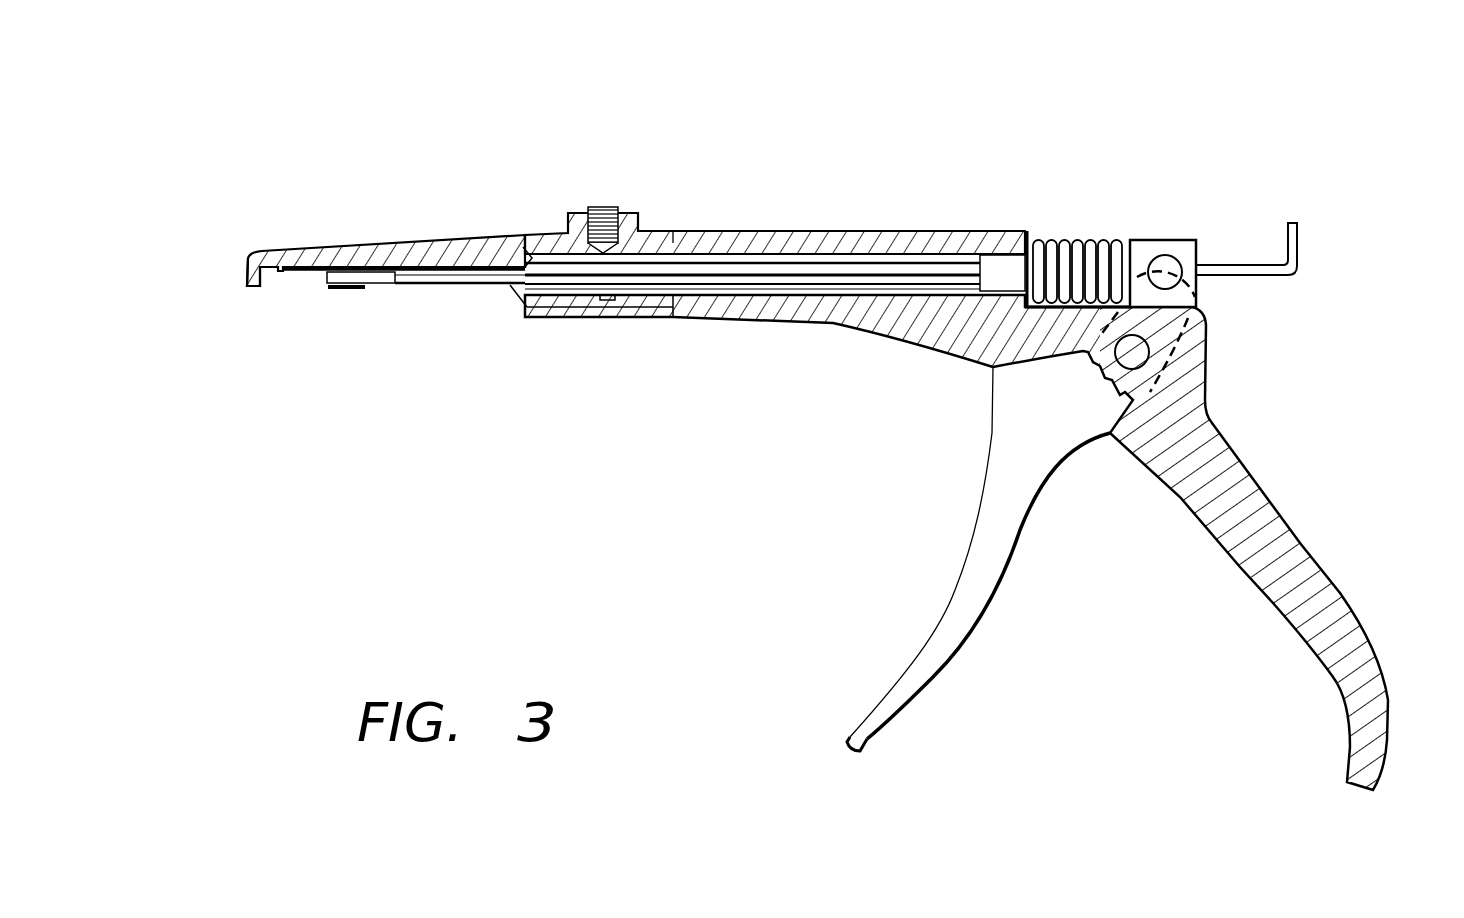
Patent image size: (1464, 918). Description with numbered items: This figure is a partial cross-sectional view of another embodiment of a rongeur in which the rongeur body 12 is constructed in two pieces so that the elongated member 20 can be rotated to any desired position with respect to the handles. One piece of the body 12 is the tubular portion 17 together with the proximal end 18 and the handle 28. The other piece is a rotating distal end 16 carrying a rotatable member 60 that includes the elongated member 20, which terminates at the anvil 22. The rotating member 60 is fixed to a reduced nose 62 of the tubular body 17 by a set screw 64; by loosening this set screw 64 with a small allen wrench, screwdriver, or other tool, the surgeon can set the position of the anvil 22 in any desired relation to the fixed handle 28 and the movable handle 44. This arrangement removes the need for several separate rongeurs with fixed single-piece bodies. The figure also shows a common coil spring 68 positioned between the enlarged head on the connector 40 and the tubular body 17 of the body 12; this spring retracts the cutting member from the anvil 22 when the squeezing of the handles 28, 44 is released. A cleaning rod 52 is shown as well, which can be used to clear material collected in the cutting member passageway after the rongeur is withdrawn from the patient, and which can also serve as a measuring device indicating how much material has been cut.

The rongeur body 12 is at (905, 232).
The rotating distal end 16 is at (273, 240).
The tubular portion 17 is at (803, 230).
The proximal end 18 is at (1300, 538).
The elongated member 20 is at (363, 250).
The anvil 22 is at (251, 276).
The handle 28 is at (1218, 512).
The connector 40 is at (1187, 237).
The handle 44 is at (1003, 510).
The cleaning rod 52 is at (1300, 272).
The rotatable member 60 is at (440, 249).
The reduced nose 62 is at (643, 320).
The set screw 64 is at (612, 210).
The coil spring 68 is at (1077, 240).